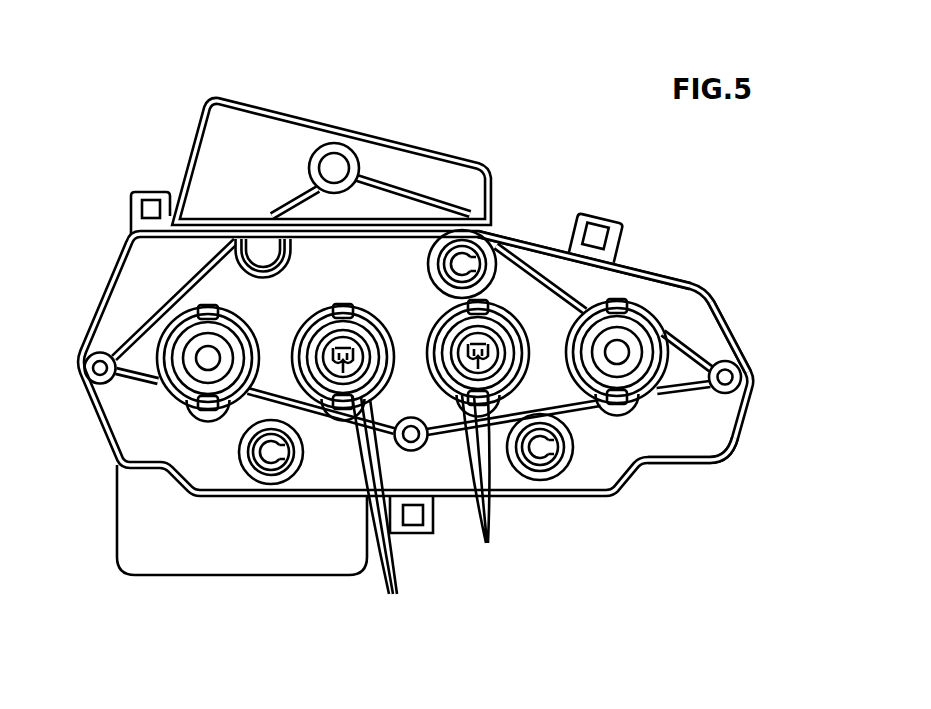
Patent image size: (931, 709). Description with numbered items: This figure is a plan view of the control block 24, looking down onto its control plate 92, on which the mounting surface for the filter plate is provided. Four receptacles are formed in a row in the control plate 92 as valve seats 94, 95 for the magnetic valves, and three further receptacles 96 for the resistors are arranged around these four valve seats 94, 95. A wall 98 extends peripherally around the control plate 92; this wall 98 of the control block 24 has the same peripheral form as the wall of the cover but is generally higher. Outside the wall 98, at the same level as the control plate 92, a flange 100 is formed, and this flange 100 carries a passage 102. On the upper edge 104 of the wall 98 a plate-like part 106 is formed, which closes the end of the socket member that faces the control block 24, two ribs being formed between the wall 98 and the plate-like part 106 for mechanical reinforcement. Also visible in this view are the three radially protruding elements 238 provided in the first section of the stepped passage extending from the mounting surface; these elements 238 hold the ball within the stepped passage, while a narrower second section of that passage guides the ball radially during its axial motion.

The control block 24 is at (752, 427).
The control plate 92 is at (626, 292).
The valve seat 94 is at (170, 347).
The valve seat 95 is at (503, 327).
The receptacle 96 is at (483, 242).
The wall 98 is at (748, 350).
The flange 100 is at (263, 133).
The passage 102 is at (337, 166).
The upper edge 104 is at (723, 460).
The plate-like part 106 is at (152, 563).
The radially protruding elements 238 is at (432, 514).